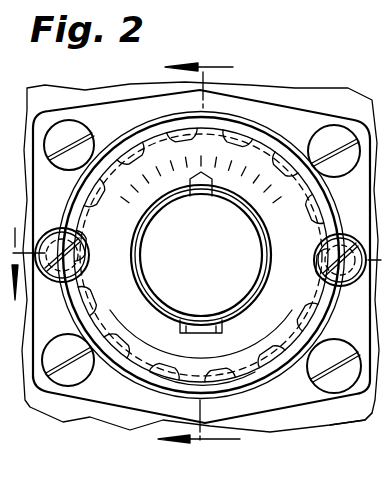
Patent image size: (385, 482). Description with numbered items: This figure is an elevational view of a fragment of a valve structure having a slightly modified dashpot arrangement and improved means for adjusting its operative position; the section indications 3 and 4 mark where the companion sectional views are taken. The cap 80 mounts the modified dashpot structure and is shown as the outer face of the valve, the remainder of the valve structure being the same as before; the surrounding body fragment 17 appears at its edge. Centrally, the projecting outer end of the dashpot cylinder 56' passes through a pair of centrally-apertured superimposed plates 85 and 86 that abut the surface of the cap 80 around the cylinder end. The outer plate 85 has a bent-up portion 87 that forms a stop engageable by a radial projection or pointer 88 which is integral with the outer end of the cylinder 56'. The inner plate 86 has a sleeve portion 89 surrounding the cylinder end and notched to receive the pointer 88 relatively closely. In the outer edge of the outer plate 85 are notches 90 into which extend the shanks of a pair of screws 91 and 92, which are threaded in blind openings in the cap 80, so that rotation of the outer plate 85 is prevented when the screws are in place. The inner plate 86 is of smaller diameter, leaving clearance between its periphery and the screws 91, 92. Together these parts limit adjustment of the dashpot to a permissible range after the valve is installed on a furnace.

The casing 17 is at (358, 410).
The cap 80 is at (302, 388).
The outer plate 85 is at (140, 347).
The inner plate 86 is at (182, 376).
The bent-up portion 87 is at (193, 335).
The pointer 88 is at (199, 182).
The sleeve portion 89 is at (147, 297).
The notches 90 is at (214, 388).
The screw 91 is at (62, 292).
The screw 92 is at (344, 296).
The cylinder 56' is at (213, 257).
The section line 3- 3 is at (199, 253).
The section line 4- 4 is at (190, 264).